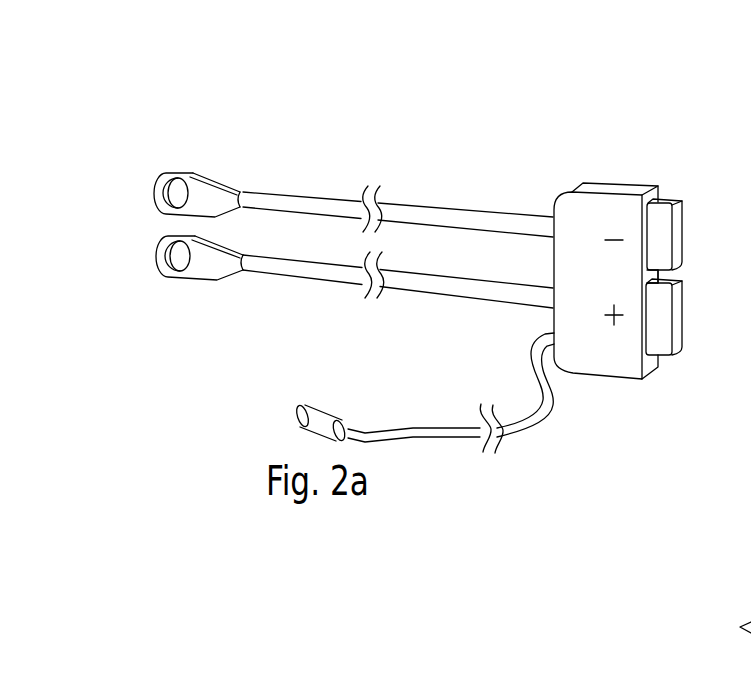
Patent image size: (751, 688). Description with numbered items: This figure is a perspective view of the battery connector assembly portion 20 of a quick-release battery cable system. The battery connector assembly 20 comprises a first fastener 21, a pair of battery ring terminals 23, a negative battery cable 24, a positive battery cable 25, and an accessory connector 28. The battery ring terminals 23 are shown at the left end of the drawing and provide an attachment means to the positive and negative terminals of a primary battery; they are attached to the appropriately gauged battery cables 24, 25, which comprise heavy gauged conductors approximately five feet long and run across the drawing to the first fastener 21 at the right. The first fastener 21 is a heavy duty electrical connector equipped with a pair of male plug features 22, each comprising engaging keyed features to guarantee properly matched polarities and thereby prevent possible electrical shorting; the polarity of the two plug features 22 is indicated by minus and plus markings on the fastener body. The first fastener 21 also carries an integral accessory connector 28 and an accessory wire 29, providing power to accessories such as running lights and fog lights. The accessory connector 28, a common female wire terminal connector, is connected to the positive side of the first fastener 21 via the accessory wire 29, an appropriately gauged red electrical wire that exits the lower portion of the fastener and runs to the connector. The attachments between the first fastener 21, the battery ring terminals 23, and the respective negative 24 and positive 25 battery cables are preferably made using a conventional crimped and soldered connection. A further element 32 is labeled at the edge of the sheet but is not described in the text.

The battery connector assembly portion 20 is at (440, 120).
The first fastener 21 is at (593, 207).
The male plug features 22 is at (658, 242).
The battery ring terminals 23 is at (205, 190).
The negative battery cable 24 is at (408, 213).
The positive battery cable 25 is at (407, 287).
The accessory connector 28 is at (298, 415).
The accessory wire 29 is at (523, 420).
The lead 32 is at (729, 639).